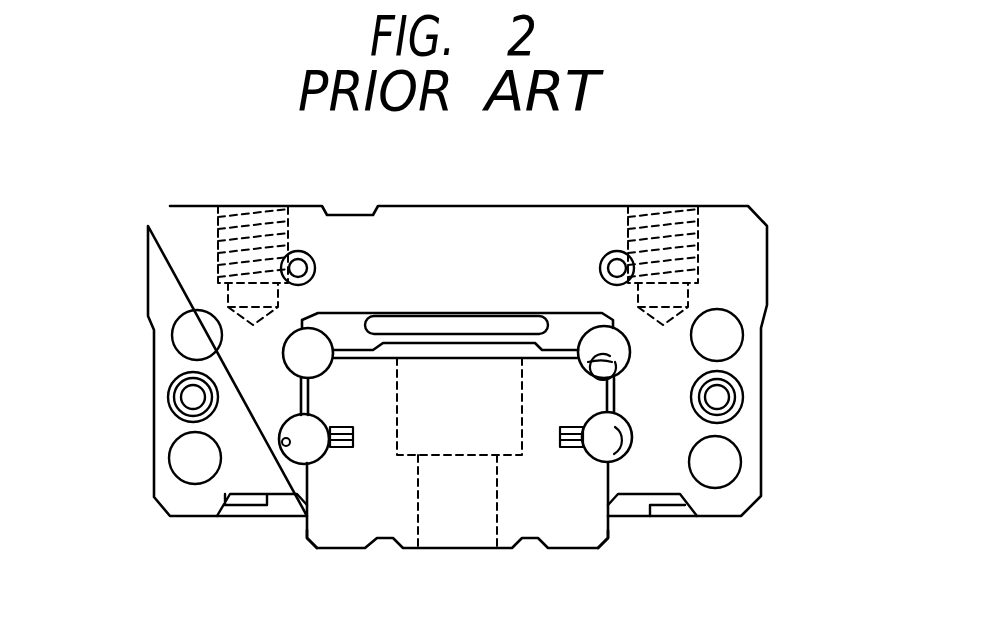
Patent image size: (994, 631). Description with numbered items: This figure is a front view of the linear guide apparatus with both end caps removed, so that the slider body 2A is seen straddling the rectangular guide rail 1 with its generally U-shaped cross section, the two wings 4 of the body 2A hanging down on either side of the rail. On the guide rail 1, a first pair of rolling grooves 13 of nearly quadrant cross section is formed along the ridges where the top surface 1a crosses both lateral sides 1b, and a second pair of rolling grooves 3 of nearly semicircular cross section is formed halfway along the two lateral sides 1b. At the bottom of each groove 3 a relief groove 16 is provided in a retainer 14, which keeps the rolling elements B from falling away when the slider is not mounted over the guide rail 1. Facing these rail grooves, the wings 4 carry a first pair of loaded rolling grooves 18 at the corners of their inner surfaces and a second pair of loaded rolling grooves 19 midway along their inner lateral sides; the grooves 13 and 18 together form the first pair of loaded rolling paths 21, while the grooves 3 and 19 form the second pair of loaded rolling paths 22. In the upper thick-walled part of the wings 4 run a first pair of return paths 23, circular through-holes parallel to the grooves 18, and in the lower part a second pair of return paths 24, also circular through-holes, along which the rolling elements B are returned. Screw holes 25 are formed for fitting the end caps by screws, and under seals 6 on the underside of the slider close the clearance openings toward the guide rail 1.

The body 2A is at (727, 198).
The guide rail 1 is at (585, 549).
The top surface 1a is at (455, 352).
The lateral sides 1b is at (307, 532).
The second pair of rolling grooves 3 is at (293, 416).
The wings 4 is at (758, 395).
The under seals 6 is at (282, 508).
The first pair of rolling grooves 13 is at (617, 372).
The retainer 14 is at (556, 440).
The relief groove 16 is at (352, 441).
The first pair of loaded rolling grooves 18 is at (620, 335).
The second pair of loaded rolling grooves 19 is at (284, 446).
The first pair of loaded rolling paths 21 is at (630, 343).
The second pair of loaded rolling paths 22 is at (278, 430).
The first pair of return paths 23 is at (183, 317).
The second pair of return paths 24 is at (741, 470).
The screw holes 25 is at (186, 397).
The rolling elements B is at (613, 432).